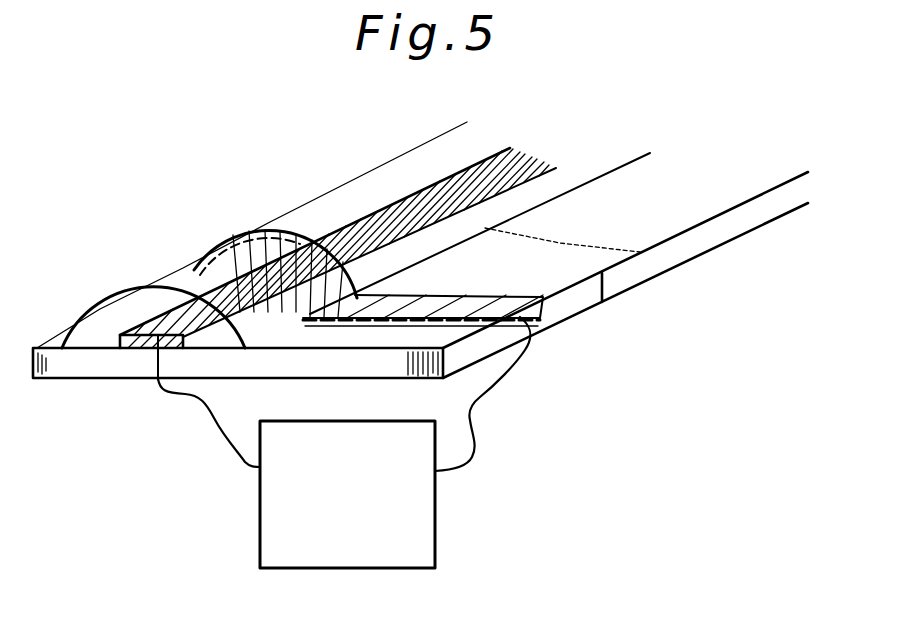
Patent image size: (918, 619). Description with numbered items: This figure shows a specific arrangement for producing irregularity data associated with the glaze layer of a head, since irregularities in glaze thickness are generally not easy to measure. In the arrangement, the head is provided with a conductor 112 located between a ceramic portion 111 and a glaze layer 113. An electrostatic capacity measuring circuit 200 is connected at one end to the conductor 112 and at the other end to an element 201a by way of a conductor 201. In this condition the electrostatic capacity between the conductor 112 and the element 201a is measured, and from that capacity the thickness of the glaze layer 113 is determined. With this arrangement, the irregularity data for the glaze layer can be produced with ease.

The ceramic portion 111 is at (58, 368).
The conductor 112 is at (128, 290).
The glaze layer 113 is at (149, 294).
The element 201a is at (267, 221).
The conductor 201 is at (490, 316).
The electrostatic capacity measuring circuit 200 is at (437, 500).